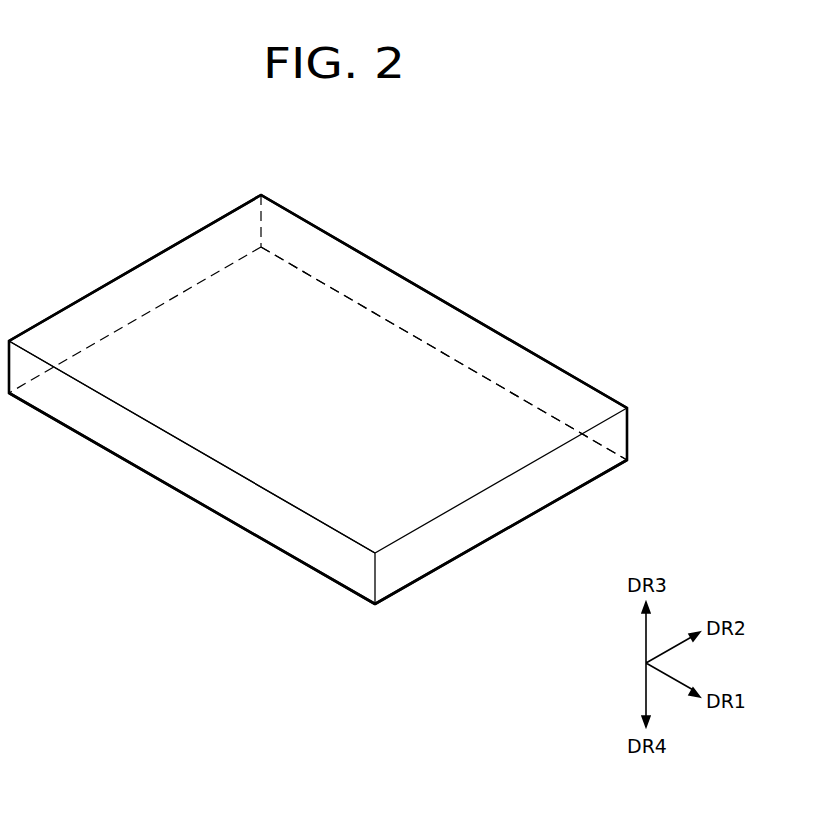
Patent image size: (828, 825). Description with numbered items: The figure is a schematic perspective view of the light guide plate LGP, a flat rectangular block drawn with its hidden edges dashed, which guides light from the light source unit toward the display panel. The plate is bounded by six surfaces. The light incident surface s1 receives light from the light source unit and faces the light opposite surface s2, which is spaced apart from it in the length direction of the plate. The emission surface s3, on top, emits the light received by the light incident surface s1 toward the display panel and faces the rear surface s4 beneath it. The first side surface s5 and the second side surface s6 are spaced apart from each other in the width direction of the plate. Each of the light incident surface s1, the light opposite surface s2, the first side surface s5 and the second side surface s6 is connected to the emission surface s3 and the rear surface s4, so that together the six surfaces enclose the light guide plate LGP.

The light guide plate LGP is at (592, 311).
The light incident surface s1 is at (168, 270).
The light opposite surface s2 is at (468, 530).
The emission surface s3 is at (487, 342).
The rear surface s4 is at (260, 510).
The first side surface s5 is at (148, 452).
The second side surface s6 is at (358, 280).